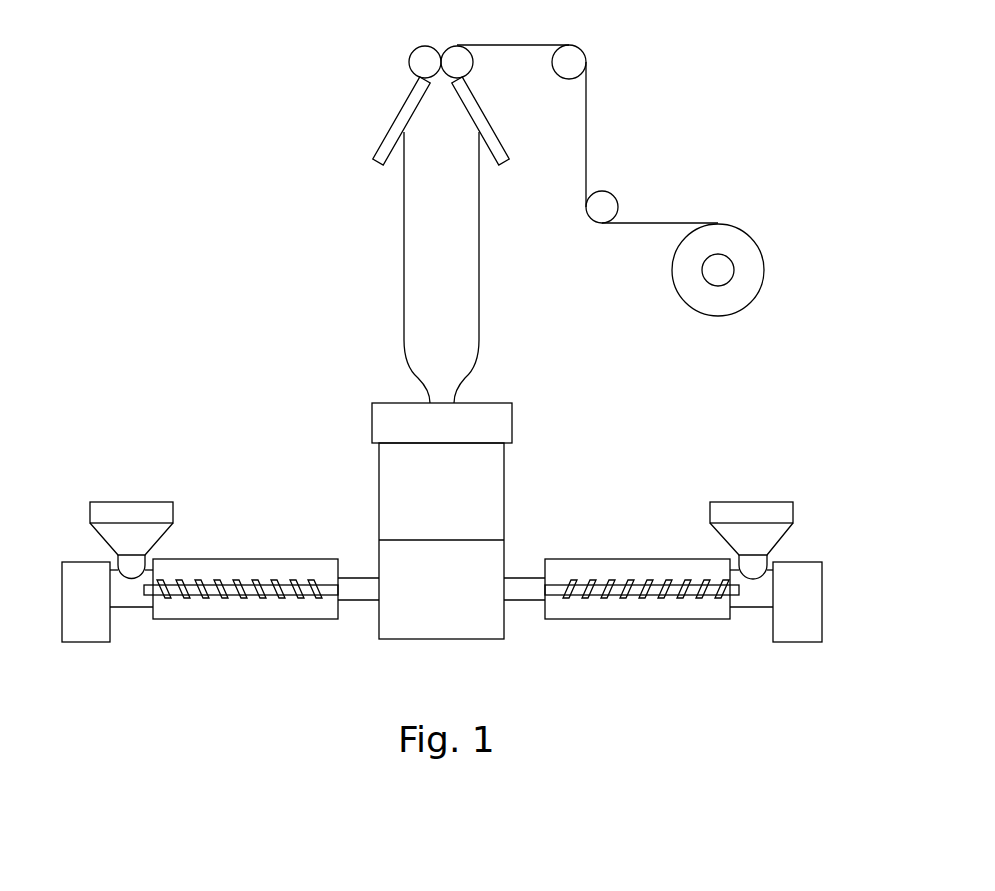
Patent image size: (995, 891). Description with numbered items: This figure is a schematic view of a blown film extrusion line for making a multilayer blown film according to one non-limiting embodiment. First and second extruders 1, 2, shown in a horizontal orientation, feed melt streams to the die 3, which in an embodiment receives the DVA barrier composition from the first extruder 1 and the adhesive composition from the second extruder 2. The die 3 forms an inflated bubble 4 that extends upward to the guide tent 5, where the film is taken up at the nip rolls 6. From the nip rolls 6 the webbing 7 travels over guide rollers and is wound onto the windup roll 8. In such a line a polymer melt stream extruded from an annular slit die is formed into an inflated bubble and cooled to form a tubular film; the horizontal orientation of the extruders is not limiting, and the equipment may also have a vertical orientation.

The first extruder 1 is at (250, 548).
The second extruder 2 is at (655, 552).
The die 3 is at (390, 401).
The inflated bubble 4 is at (479, 292).
The guide tent 5 is at (385, 133).
The nip rolls 6 is at (420, 47).
The webbing 7 is at (586, 133).
The windup roll 8 is at (763, 248).